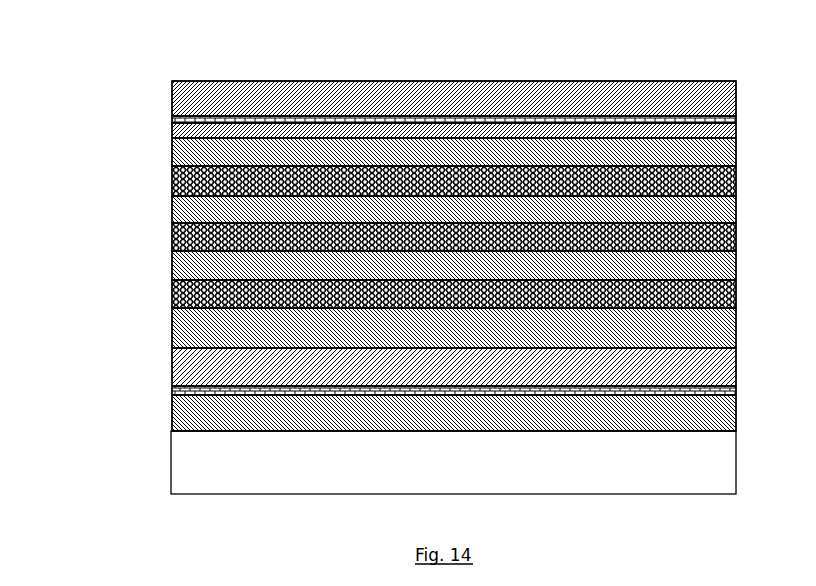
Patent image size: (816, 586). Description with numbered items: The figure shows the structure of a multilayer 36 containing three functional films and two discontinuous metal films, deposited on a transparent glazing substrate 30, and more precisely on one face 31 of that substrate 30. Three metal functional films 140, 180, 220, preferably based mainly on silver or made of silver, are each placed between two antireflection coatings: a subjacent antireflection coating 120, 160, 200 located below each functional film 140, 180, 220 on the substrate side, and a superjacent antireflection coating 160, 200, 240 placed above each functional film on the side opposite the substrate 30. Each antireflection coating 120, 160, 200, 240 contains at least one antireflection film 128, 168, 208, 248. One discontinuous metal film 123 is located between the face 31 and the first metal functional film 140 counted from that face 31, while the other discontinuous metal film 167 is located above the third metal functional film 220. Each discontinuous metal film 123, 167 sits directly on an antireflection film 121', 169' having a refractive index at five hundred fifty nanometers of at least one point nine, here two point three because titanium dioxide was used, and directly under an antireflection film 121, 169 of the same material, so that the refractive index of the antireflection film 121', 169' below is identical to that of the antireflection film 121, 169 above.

The multilayer 36 is at (167, 46).
The antireflection film 169 is at (390, 97).
The discontinuous metal film 167 is at (170, 112).
The antireflection film 169' is at (378, 135).
The antireflection film 248 is at (170, 146).
The functional film 220 is at (172, 180).
The antireflection film 208 is at (172, 203).
The functional film 180 is at (172, 233).
The antireflection film 168 is at (172, 263).
The functional film 140 is at (172, 291).
The antireflection film 128 is at (172, 328).
The antireflection film 121 is at (415, 367).
The discontinuous metal film 123 is at (172, 382).
The antireflection film 121' is at (407, 413).
The antireflection coating 240 is at (410, 122).
The antireflection coating 200 is at (444, 197).
The antireflection coating 160 is at (442, 252).
The antireflection coating 120 is at (438, 369).
The transparent glazing substrate 30 is at (453, 451).
The face 31 is at (695, 424).